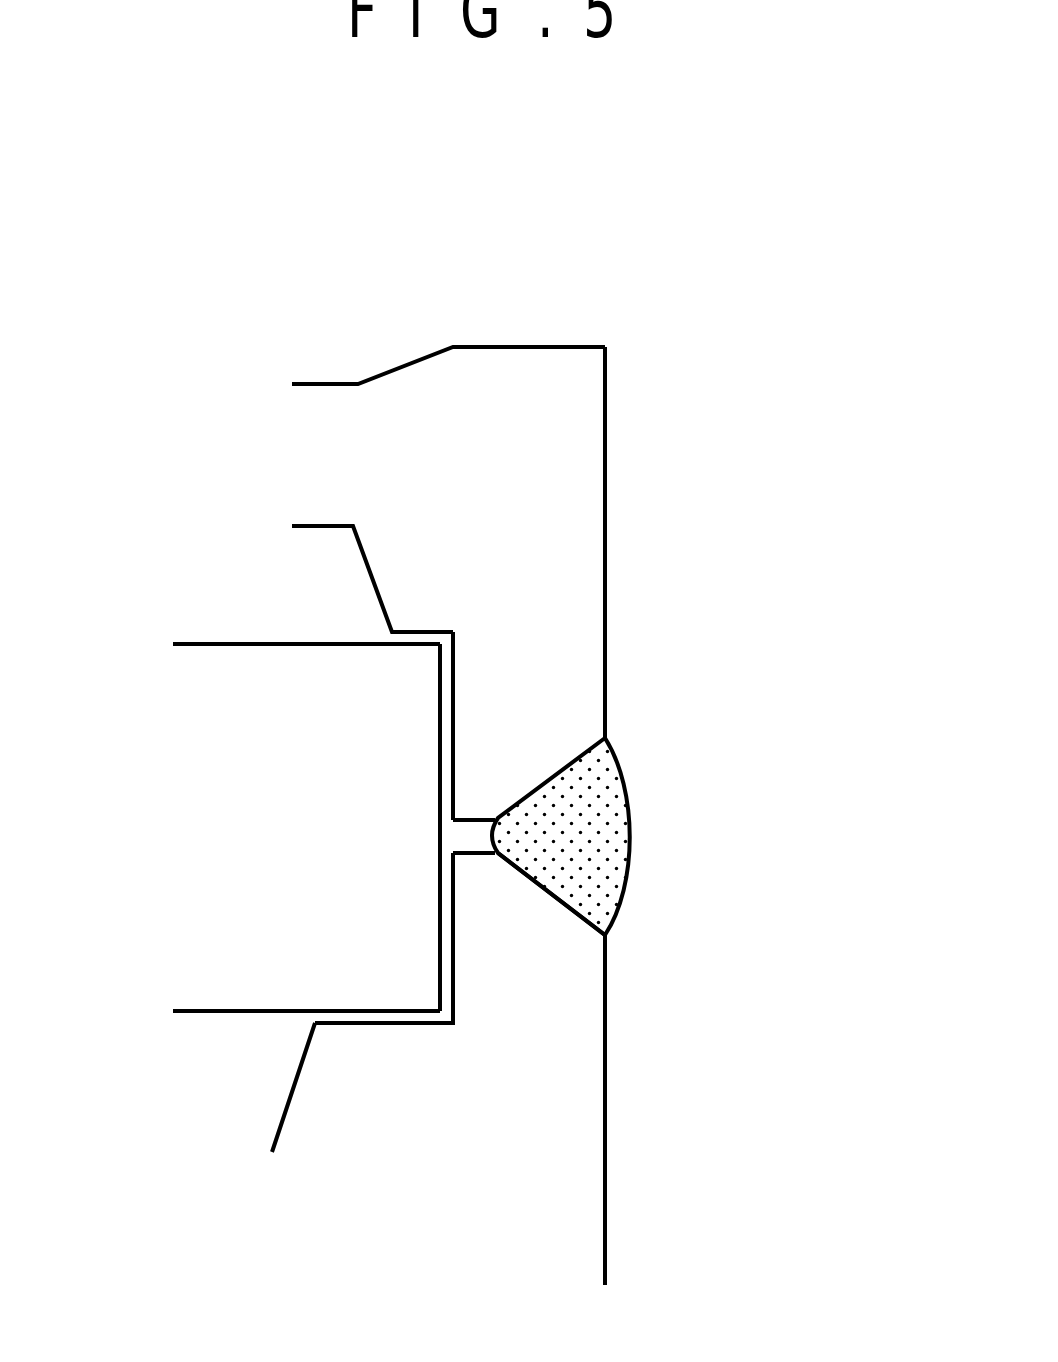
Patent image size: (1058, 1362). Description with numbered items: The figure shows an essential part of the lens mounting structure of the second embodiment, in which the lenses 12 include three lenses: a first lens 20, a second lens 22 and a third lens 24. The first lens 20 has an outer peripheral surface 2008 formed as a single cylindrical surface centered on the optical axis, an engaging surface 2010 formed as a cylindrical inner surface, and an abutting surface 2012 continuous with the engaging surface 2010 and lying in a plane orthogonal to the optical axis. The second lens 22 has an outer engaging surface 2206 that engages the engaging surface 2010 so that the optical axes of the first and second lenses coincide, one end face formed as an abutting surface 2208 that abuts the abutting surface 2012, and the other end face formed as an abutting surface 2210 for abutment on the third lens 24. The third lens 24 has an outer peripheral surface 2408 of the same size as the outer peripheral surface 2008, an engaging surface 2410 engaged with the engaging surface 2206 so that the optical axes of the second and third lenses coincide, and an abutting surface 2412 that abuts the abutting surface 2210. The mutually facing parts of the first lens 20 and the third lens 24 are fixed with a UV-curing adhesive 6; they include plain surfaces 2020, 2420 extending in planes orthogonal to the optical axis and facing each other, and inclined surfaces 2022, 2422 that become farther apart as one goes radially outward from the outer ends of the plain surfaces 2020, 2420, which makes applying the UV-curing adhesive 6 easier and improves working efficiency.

The lenses 12 is at (427, 300).
The first lens 20 is at (627, 352).
The second lens 22 is at (207, 643).
The third lens 24 is at (617, 1243).
The UV-curing adhesive 6 is at (632, 817).
The outer peripheral surface 2008 is at (605, 418).
The engaging surface 2010 is at (440, 687).
The abutting surface 2012 is at (410, 633).
The plain surface 2020 is at (483, 821).
The inclined surface 2022 is at (691, 726).
The engaging surface 2206 is at (440, 728).
The abutting surface 2208 is at (278, 643).
The abutting surface 2210 is at (212, 1011).
The outer peripheral surface 2408 is at (605, 1138).
The engaging surface 2410 is at (452, 962).
The abutting surface 2412 is at (385, 1024).
The plain surface 2420 is at (478, 851).
The inclined surface 2422 is at (588, 888).